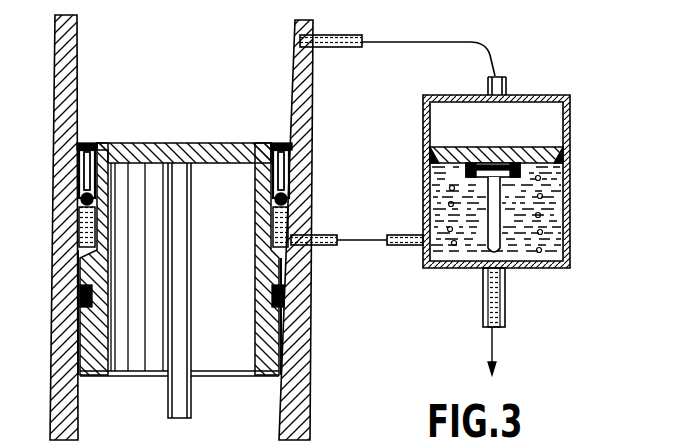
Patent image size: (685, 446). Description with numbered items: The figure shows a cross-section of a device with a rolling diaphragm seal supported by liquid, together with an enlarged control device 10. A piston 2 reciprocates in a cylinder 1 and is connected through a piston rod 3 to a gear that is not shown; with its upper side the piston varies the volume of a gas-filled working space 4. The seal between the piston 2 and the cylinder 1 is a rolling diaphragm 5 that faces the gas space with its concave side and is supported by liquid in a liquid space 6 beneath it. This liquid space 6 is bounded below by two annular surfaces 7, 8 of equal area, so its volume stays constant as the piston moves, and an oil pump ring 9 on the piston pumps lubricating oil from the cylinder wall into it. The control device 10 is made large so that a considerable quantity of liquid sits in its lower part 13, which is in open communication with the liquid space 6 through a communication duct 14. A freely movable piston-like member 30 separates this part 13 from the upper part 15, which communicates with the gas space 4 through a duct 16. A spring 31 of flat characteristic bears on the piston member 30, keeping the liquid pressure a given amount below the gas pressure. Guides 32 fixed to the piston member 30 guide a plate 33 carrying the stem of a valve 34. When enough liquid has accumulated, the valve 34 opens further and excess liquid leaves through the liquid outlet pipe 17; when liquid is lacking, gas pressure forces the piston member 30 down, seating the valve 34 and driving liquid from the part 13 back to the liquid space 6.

The cylinder 1 is at (65, 70).
The piston 2 is at (75, 330).
The piston rod 3 is at (181, 397).
The working space 4 is at (194, 92).
The rolling diaphragm 5 is at (75, 185).
The liquid space 6 is at (80, 222).
The annular surface 7 is at (78, 256).
The annular surface 8 is at (277, 253).
The oil pump ring 9 is at (284, 296).
The control device 10 is at (592, 97).
The liquid part of control device 13 is at (563, 231).
The communication duct 14 is at (355, 242).
The gas part of control device 15 is at (504, 137).
The duct 16 is at (498, 56).
The liquid outlet pipe 17 is at (495, 348).
The piston-like member 30 is at (537, 150).
The spring 31 is at (540, 216).
The guides 32 is at (563, 178).
The plate 33 is at (432, 178).
The valve 34 is at (432, 205).